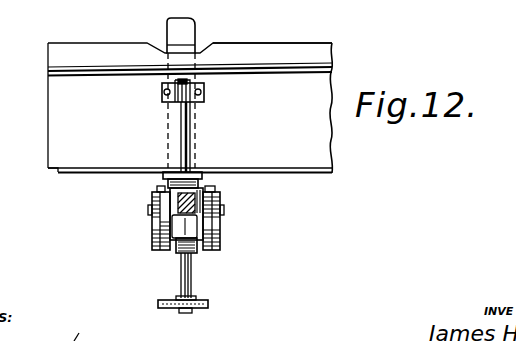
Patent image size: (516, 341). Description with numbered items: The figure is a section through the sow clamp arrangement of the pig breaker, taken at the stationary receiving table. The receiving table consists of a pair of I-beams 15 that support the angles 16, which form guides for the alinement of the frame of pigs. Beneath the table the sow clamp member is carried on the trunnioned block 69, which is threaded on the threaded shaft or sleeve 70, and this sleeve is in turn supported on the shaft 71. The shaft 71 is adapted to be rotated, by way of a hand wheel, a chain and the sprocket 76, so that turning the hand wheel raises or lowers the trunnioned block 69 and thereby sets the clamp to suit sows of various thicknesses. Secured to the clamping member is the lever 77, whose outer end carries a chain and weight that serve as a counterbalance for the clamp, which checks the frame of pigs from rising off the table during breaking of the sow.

The I-beams 15 is at (322, 146).
The angles 16 is at (266, 46).
The trunnioned block 69 is at (155, 238).
The threaded shaft or sleeve 70 is at (176, 249).
The shaft 71 is at (168, 128).
The sprocket 76 is at (209, 305).
The lever 77 is at (203, 179).